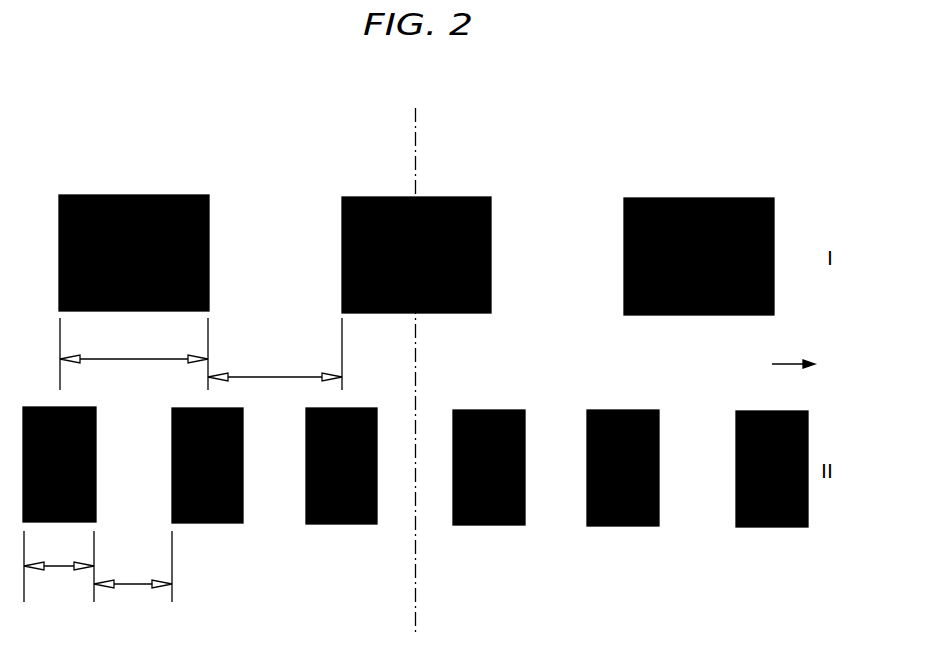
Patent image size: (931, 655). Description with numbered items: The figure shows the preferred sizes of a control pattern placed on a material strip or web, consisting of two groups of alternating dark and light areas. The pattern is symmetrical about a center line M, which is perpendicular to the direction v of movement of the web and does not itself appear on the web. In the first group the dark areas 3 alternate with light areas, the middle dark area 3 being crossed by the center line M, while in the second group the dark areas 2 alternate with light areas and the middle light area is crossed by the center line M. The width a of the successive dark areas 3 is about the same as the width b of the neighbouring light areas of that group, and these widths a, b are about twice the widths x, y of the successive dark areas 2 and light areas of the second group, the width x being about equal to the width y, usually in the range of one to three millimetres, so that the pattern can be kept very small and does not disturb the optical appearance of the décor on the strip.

The dark area of the second group 2 is at (372, 408).
The dark area of the first group 3 is at (461, 197).
The center line M is at (417, 358).
The direction of movement v is at (800, 363).
The width of dark areas of the first group a is at (134, 354).
The width of light areas of the first group b is at (275, 354).
The width of dark areas of the second group x is at (59, 566).
The width of light areas of the second group y is at (133, 566).